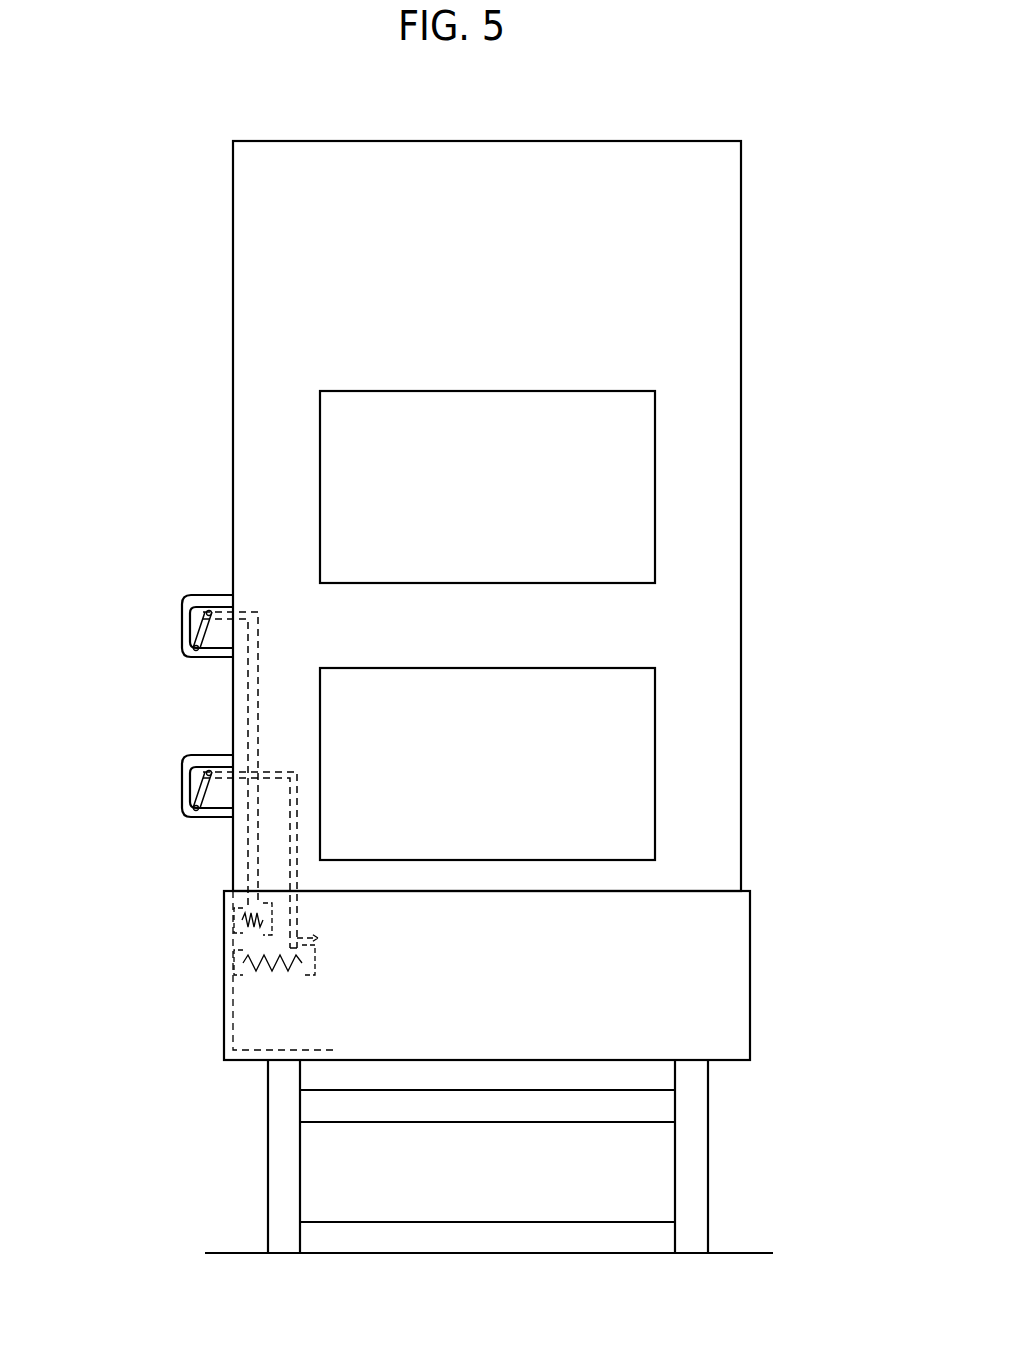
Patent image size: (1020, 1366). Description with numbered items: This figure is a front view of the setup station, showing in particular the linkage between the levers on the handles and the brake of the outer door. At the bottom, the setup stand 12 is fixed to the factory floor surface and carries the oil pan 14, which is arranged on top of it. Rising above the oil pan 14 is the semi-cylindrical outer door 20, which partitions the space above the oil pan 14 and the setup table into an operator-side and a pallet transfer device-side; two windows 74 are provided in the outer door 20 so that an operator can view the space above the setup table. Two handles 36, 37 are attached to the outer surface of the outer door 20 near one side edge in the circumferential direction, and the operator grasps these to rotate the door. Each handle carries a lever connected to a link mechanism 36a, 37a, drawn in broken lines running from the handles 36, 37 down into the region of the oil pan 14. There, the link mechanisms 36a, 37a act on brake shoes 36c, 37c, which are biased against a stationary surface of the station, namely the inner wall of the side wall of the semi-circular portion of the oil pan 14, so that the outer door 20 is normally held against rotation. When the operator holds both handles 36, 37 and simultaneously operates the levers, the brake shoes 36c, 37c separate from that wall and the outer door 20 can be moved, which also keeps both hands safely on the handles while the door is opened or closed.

The setup stand 12 is at (700, 1148).
The oil pan 14 is at (728, 952).
The outer door 20 is at (708, 744).
The handle 36 is at (182, 620).
The link mechanism 36a is at (262, 644).
The brake shoe 36c is at (230, 913).
The handle 37 is at (182, 796).
The link mechanism 37a is at (293, 758).
The brake shoe 37c is at (230, 965).
The window 74 is at (505, 504).